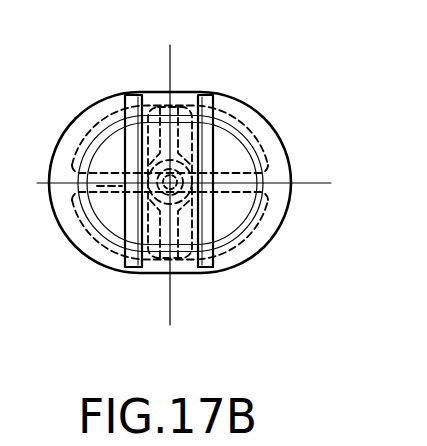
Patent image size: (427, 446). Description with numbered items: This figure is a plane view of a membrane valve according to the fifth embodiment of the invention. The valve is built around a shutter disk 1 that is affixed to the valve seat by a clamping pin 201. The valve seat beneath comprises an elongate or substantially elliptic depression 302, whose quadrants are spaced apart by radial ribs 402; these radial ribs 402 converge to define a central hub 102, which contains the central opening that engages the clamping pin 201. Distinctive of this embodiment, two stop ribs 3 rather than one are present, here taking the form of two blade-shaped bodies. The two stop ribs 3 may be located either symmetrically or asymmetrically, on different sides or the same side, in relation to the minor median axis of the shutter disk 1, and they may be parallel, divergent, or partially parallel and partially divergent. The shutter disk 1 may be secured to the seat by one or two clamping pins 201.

The shutter disk 1 is at (247, 97).
The stop ribs 3 is at (134, 96).
The central hub 102 is at (165, 250).
The clamping pin 201 is at (187, 165).
The elongate or substantially elliptic depression 302 is at (90, 240).
The radial ribs 402 is at (237, 211).